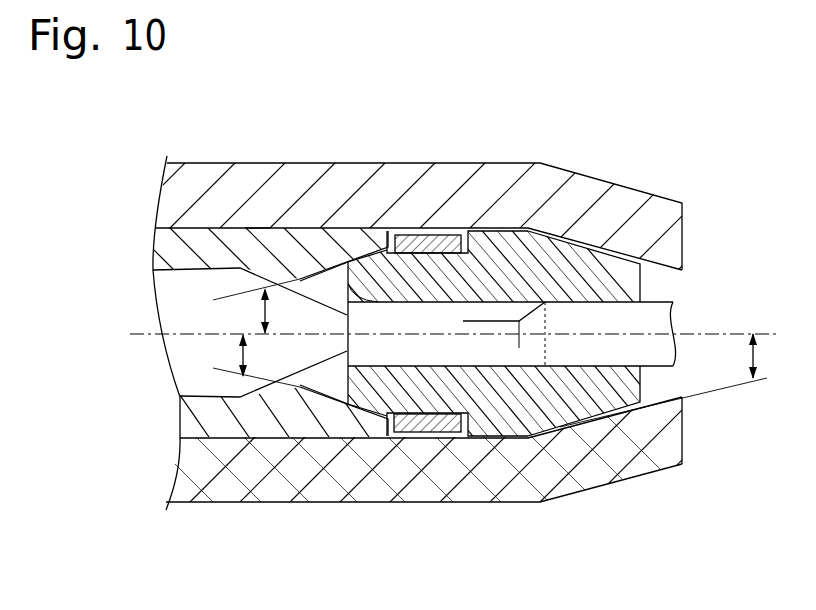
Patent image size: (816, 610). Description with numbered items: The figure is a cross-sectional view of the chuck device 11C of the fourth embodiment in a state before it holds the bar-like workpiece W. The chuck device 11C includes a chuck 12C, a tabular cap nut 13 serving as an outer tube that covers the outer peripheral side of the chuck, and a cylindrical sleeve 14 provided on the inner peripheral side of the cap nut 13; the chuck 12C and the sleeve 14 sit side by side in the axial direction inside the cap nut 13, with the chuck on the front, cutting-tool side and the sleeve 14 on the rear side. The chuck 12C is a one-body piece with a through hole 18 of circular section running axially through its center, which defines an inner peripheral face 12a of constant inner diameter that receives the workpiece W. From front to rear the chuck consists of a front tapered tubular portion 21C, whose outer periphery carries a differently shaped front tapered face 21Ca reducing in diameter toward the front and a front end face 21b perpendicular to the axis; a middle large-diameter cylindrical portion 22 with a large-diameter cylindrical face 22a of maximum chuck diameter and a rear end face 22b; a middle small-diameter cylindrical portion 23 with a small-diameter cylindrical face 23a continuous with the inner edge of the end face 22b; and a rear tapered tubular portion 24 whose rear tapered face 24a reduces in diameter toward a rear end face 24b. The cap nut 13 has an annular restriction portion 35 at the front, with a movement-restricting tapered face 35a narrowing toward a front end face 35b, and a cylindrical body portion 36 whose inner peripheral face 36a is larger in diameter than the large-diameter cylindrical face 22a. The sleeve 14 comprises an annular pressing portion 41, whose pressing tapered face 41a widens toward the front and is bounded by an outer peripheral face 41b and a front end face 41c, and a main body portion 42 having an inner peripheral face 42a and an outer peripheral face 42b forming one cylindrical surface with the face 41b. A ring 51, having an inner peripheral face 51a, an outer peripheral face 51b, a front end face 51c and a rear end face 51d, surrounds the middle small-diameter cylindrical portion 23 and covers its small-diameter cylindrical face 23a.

The chuck device 11C is at (678, 168).
The chuck 12C is at (556, 232).
The inner peripheral face 12a is at (200, 260).
The cap nut 13 is at (603, 178).
The sleeve 14 is at (257, 222).
The through hole 18 is at (432, 322).
The front tapered tubular portion 21C is at (608, 275).
The front tapered face 21Ca is at (603, 412).
The front end face 21b is at (645, 386).
The middle large-diameter cylindrical portion 22 is at (497, 250).
The large-diameter cylindrical face 22a is at (556, 440).
The end face 22b is at (474, 432).
The middle small-diameter cylindrical portion 23 is at (413, 243).
The small-diameter cylindrical face 23a is at (424, 431).
The rear tapered tubular portion 24 is at (350, 406).
The rear tapered face 24a is at (350, 255).
The rear end face 24b is at (295, 392).
The restriction portion 35 is at (662, 228).
The movement-restricting tapered face 35a is at (642, 474).
The front end face 35b is at (684, 448).
The body portion 36 is at (282, 197).
The inner peripheral face 36a is at (243, 422).
The pressing portion 41 is at (370, 242).
The pressing tapered face 41a is at (338, 422).
The outer peripheral face 41b is at (318, 415).
The front end face 41c is at (388, 434).
The main body portion 42 is at (202, 248).
The inner peripheral face 42a is at (205, 388).
The outer peripheral face 42b is at (208, 470).
The ring 51 is at (425, 246).
The inner peripheral face 51a is at (446, 428).
The outer peripheral face 51b is at (410, 430).
The front end face 51c is at (500, 434).
The rear end face 51d is at (388, 428).
The workpiece W is at (652, 324).